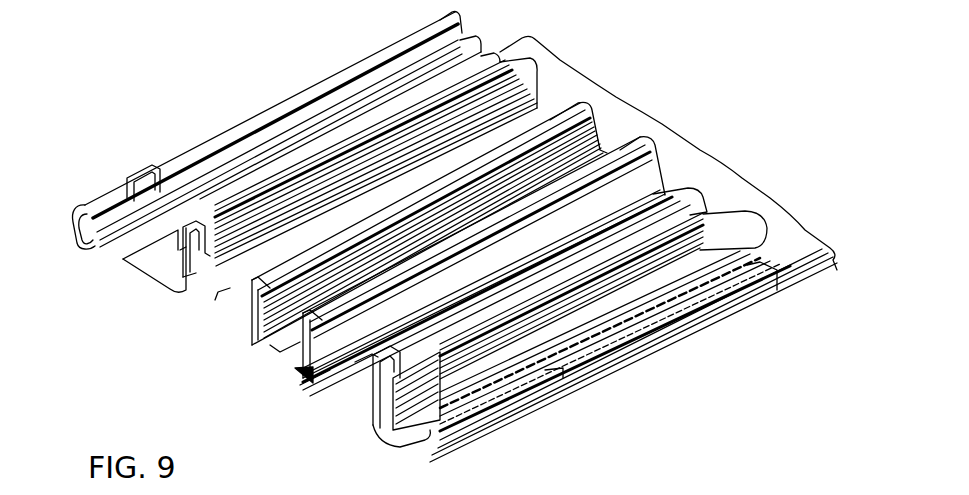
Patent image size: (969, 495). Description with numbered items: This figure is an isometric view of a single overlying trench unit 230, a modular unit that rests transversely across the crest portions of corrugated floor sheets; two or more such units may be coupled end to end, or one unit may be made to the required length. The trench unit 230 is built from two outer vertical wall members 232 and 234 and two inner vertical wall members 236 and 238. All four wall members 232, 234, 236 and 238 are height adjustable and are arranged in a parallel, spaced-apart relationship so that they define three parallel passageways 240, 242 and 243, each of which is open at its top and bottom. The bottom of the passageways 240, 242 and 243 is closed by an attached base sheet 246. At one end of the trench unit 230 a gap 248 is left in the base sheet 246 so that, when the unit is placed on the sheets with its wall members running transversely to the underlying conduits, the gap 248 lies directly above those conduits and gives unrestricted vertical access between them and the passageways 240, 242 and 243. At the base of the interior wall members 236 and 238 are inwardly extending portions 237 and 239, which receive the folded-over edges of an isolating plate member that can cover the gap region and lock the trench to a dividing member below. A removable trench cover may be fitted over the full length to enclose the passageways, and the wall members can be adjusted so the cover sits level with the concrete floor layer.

The trench unit 230 is at (535, 416).
The outer vertical wall member 232 is at (150, 277).
The outer vertical wall member 234 is at (403, 410).
The inner vertical wall member 236 is at (247, 320).
The inwardly extending portion 237 is at (280, 353).
The inner vertical wall member 238 is at (305, 375).
The inwardly extending portion 239 is at (307, 373).
The passageway 240 is at (260, 350).
The passageway 242 is at (200, 292).
The passageway 243 is at (362, 363).
The base sheet 246 is at (620, 102).
The gap 248 is at (235, 293).